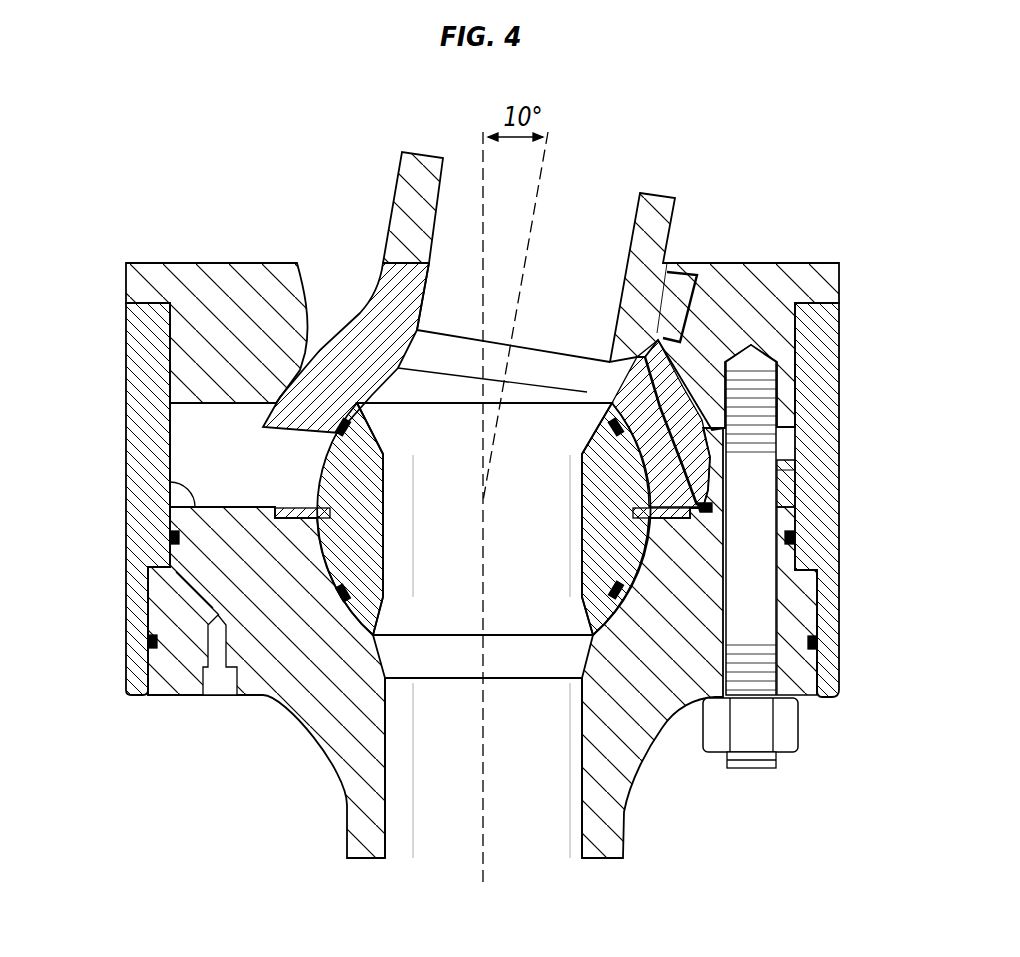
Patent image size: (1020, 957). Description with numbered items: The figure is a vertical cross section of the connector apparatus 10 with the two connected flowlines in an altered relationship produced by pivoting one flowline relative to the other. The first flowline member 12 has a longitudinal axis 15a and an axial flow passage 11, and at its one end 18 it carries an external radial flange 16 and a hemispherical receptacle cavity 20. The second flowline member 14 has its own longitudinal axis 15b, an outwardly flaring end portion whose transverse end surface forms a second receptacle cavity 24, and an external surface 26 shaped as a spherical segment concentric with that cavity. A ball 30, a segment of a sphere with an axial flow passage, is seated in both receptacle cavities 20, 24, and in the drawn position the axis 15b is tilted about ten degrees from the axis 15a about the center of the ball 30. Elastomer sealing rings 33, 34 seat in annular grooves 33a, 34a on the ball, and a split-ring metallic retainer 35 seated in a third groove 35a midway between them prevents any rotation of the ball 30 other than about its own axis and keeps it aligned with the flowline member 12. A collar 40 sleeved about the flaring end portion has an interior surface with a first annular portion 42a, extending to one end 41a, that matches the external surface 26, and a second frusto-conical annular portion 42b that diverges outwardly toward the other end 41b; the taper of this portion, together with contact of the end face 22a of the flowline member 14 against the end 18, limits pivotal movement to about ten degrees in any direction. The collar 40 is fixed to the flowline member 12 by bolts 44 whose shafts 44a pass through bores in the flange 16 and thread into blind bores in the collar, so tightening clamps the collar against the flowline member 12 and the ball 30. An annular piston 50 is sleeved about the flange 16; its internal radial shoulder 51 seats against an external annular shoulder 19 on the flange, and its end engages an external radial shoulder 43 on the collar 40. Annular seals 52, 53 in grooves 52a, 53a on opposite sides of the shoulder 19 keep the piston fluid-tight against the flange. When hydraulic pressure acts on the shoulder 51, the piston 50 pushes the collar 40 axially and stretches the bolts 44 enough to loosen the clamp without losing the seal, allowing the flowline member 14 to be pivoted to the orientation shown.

The connector apparatus 10 is at (822, 179).
The axial flow passage 11 is at (532, 757).
The first flowline member 12 is at (346, 840).
The second flowline member 14 is at (396, 191).
The longitudinal axis 15a is at (487, 827).
The longitudinal axis 15b is at (548, 162).
The external radial flange 16 is at (817, 602).
The one end 18 is at (172, 488).
The external annular shoulder 19 is at (810, 572).
The receptacle cavity 20 is at (325, 555).
The end face 22a is at (300, 432).
The second receptacle cavity 24 is at (390, 404).
The external surface 26 is at (683, 387).
The ball 30 is at (599, 555).
The elastomer sealing ring 33 is at (348, 596).
The annular groove 33a is at (615, 592).
The elastomer sealing ring 34 is at (338, 427).
The annular groove 34a is at (612, 424).
The split-ring metallic retainer 35 is at (318, 482).
The third annular groove 35a is at (658, 507).
The collar 40 is at (174, 262).
The one end of the collar 41a is at (785, 432).
The other end of the collar 41b is at (244, 262).
The first annular portion 42a is at (614, 400).
The second annular portion 42b is at (693, 300).
The external radial shoulder 43 is at (827, 307).
The bolts 44 is at (800, 728).
The bolt shaft 44a is at (778, 476).
The annular piston 50 is at (126, 358).
The internal annular radial shoulder 51 is at (148, 585).
The annular seal 52 is at (794, 540).
The groove 52a is at (170, 538).
The annular seal 53 is at (817, 645).
The groove 53a is at (148, 644).